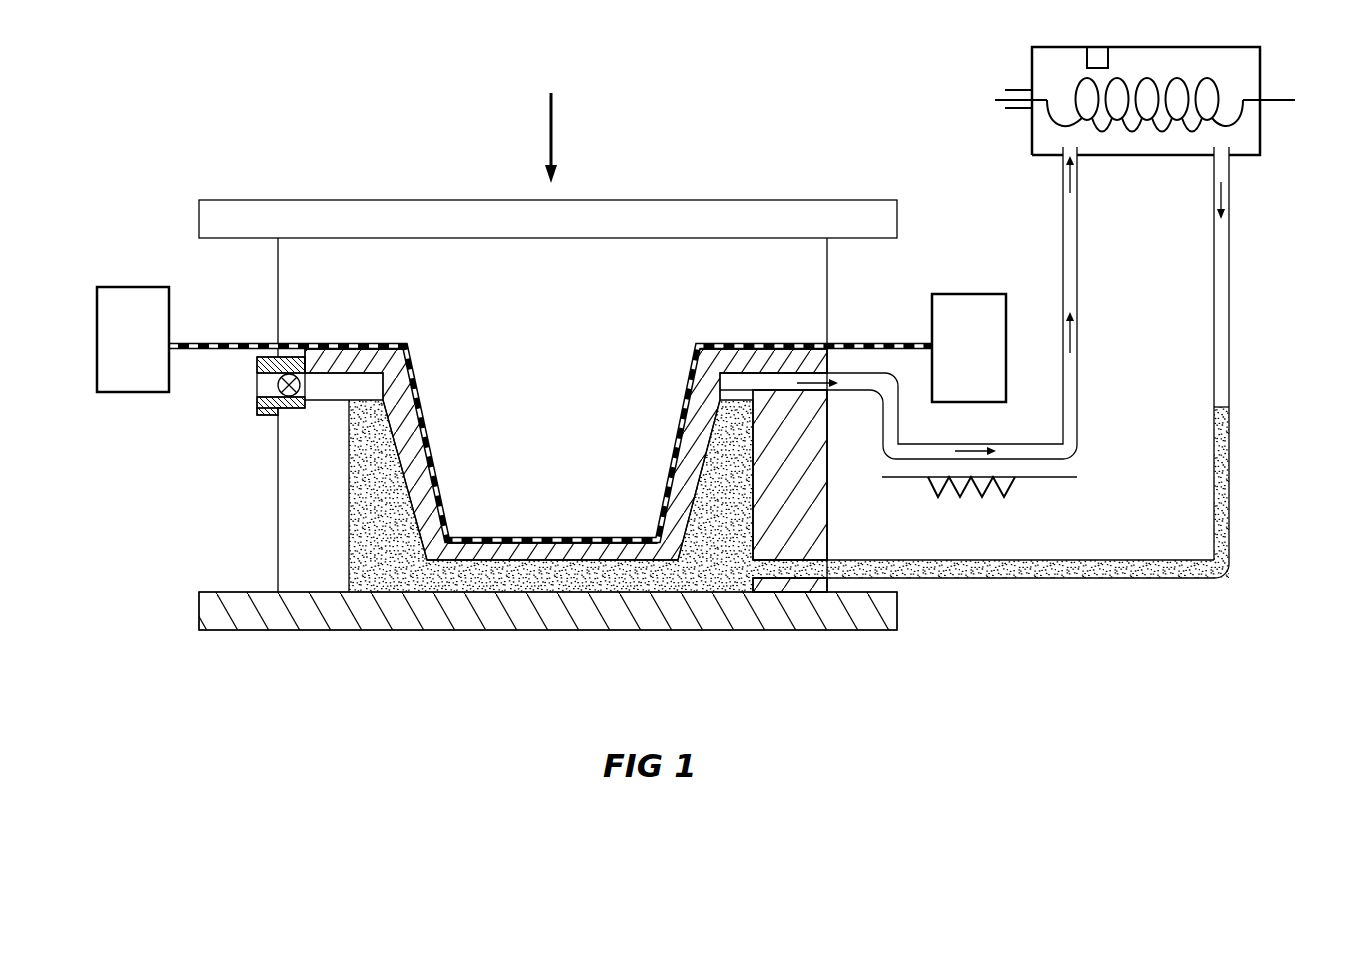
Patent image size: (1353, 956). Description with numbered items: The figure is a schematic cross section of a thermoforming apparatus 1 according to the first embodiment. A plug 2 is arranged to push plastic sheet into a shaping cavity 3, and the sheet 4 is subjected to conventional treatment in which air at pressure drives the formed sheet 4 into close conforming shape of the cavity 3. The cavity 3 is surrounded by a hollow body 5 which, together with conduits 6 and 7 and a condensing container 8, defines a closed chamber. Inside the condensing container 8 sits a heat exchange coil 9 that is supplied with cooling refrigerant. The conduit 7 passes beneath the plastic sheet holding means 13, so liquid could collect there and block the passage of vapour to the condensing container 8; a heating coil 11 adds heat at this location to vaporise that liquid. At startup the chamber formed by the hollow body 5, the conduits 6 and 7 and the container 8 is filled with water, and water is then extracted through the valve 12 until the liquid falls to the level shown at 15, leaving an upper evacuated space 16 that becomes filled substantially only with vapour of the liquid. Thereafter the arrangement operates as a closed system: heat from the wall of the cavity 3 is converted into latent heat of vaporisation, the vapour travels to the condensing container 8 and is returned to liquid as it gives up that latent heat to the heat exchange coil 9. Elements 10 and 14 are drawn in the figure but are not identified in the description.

The thermoforming apparatus 1 is at (170, 178).
The plug 2 is at (556, 440).
The shaping cavity 3 is at (535, 560).
The sheet 4 is at (442, 477).
The hollow body 5 is at (397, 572).
The conduit 6 is at (975, 567).
The conduit 7 is at (1078, 432).
The condensing container 8 is at (1058, 72).
The heat exchange coil 9 is at (1160, 83).
The mold frame 10 is at (362, 385).
The heating coil 11 is at (1002, 500).
The valve 12 is at (317, 383).
The plastic sheet holding means 13 is at (145, 365).
The temperature sensor 14 is at (1088, 60).
The liquid level 15 is at (1223, 445).
The upper evacuated space 16 is at (1223, 299).